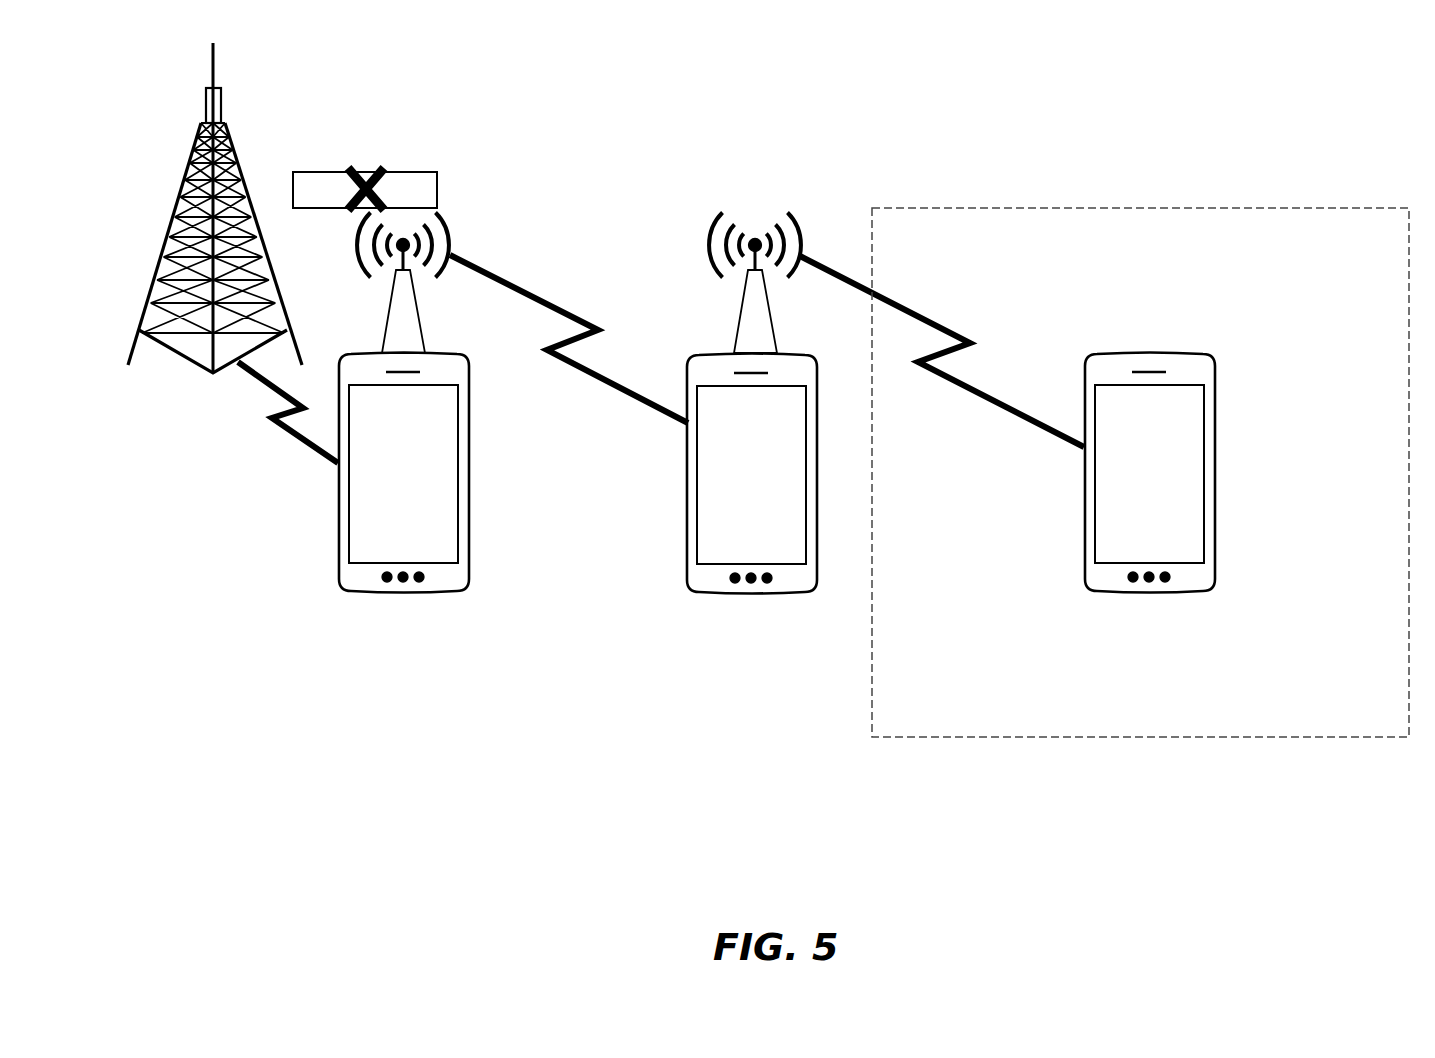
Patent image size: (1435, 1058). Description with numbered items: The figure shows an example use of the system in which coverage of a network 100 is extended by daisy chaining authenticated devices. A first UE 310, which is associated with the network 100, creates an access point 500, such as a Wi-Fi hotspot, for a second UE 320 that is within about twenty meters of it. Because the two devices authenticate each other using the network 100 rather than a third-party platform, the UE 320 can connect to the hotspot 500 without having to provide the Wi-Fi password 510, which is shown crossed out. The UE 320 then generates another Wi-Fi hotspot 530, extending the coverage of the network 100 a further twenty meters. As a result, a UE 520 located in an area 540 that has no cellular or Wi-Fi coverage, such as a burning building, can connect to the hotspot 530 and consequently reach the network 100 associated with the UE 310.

The network 100 is at (220, 120).
The user equipment 310 is at (440, 352).
The user equipment 320 is at (787, 355).
The access point 500 is at (438, 229).
The Wi-Fi password 510 is at (438, 172).
The user equipment 520 is at (1152, 354).
The Wi-Fi hotspot 530 is at (793, 229).
The area 540 is at (1237, 208).